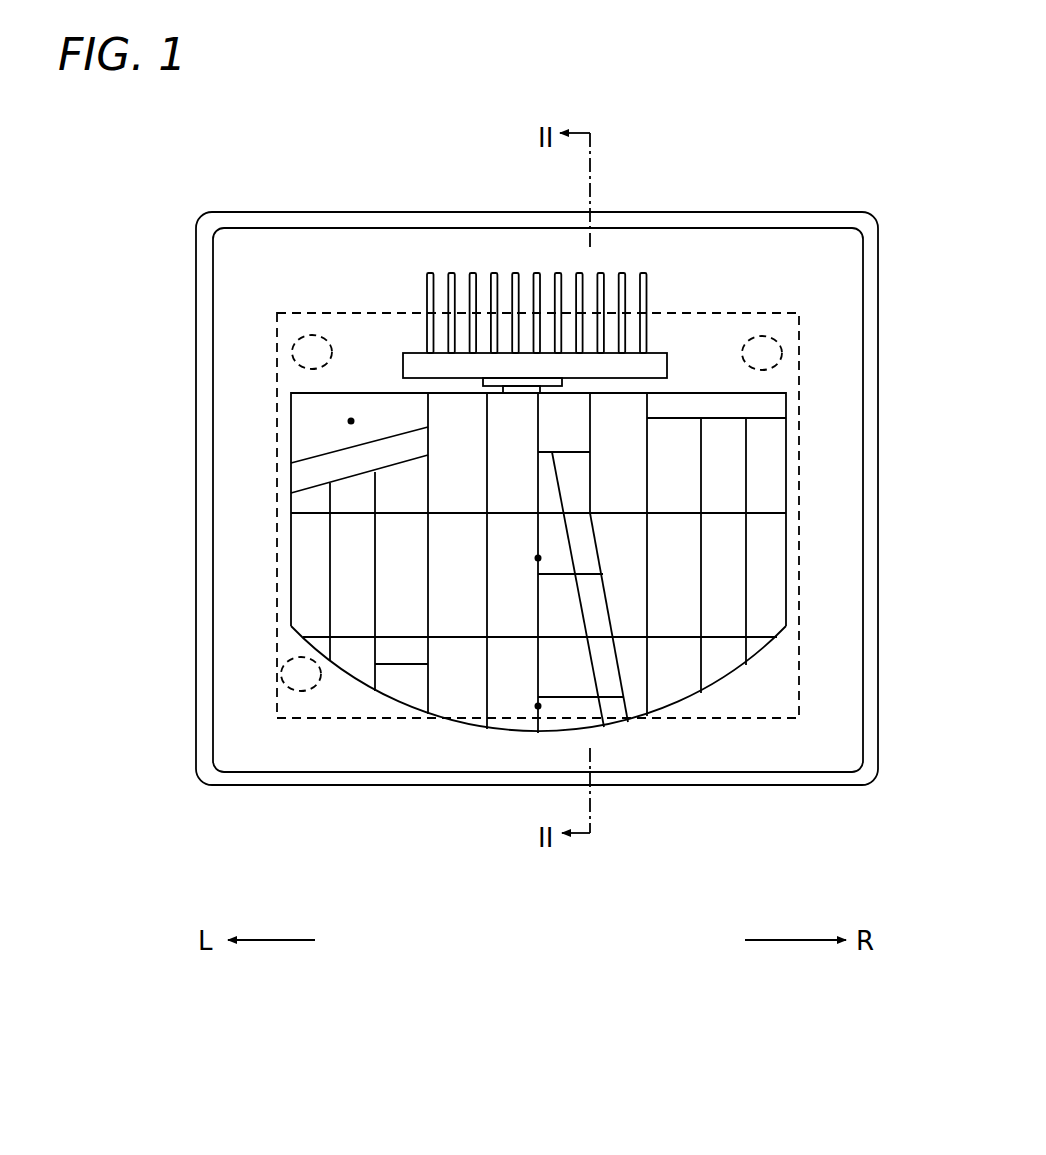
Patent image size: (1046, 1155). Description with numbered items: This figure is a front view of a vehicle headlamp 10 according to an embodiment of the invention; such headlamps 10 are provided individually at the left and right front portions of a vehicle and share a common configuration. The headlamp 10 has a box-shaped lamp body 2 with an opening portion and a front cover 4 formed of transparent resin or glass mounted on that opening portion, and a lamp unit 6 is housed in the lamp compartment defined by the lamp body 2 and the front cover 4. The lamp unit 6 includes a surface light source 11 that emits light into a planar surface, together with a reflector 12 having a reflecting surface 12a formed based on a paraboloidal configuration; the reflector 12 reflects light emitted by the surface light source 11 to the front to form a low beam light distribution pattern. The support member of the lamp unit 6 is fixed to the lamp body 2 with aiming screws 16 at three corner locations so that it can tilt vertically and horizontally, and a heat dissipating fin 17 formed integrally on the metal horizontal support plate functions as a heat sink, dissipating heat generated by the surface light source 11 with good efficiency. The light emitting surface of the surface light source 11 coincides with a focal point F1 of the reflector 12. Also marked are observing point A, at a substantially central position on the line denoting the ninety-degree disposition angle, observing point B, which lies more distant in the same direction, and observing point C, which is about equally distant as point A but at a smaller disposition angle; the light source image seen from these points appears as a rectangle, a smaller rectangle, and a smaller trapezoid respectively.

The vehicle headlamp 10 is at (153, 247).
The lamp body 2 is at (879, 263).
The front cover 4 is at (864, 320).
The lamp unit 6 is at (698, 297).
The surface light source 11 is at (483, 381).
The reflector 12 is at (727, 680).
The reflecting surface 12a is at (672, 687).
The aiming screws 16 is at (282, 682).
The heat dissipating fin 17 is at (426, 278).
The observing point A is at (538, 558).
The observing point B is at (538, 706).
The observing point C is at (351, 421).
The focal point F1 is at (542, 391).